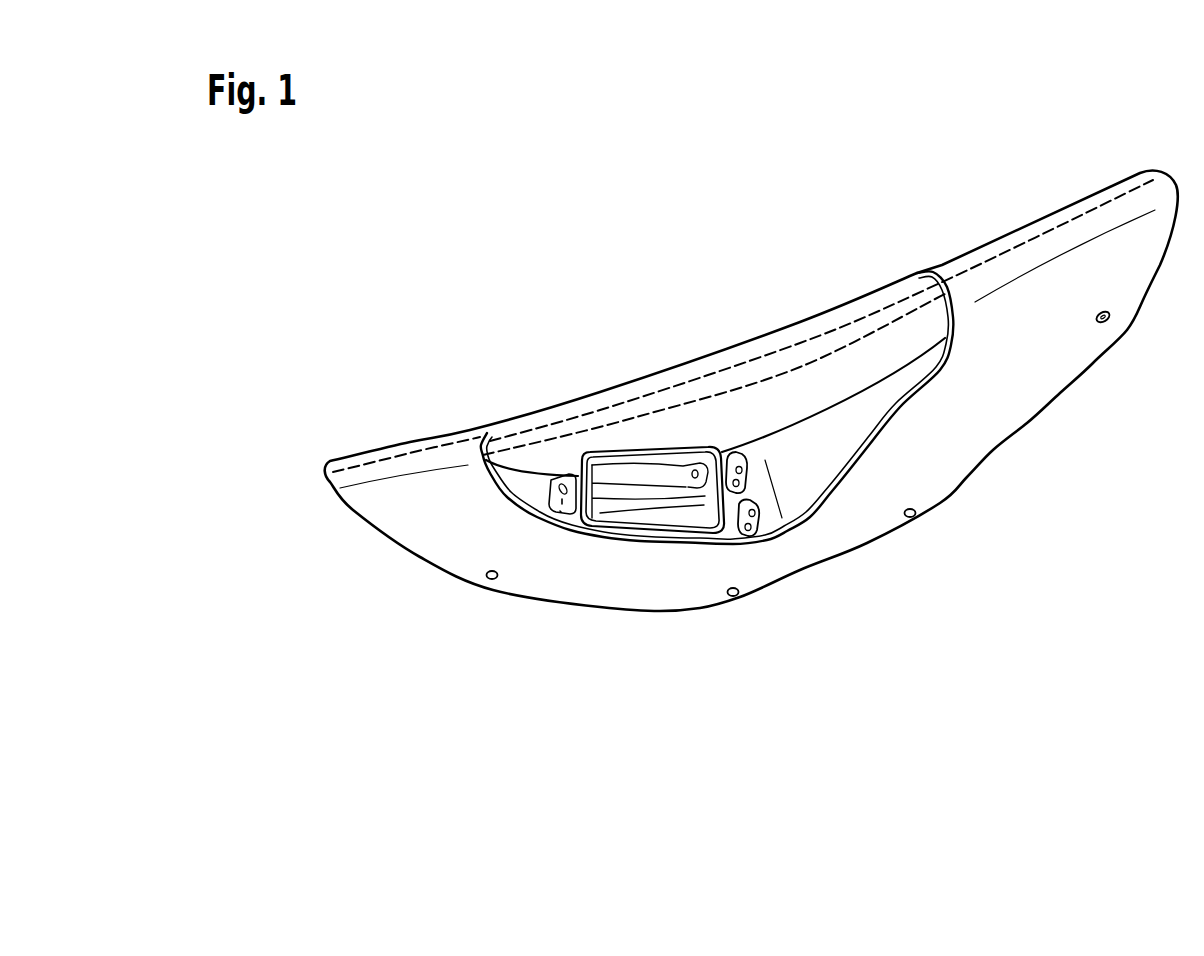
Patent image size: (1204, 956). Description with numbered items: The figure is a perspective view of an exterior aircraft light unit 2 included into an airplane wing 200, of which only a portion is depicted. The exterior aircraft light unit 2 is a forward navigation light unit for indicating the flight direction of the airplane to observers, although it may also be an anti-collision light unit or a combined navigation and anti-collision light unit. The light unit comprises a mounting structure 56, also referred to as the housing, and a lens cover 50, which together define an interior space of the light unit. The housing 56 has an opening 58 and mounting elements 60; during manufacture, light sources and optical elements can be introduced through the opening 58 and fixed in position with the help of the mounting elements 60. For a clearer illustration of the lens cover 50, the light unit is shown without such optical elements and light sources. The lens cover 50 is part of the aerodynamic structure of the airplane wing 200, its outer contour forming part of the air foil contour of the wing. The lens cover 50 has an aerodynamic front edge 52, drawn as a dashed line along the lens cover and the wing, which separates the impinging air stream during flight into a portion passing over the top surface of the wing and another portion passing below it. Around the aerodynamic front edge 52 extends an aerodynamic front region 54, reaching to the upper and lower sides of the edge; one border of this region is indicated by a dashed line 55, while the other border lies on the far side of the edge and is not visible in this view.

The exterior aircraft light unit 2 is at (604, 351).
The lens cover 50 is at (843, 383).
The aerodynamic front edge 52 is at (703, 378).
The aerodynamic front region 54 is at (650, 405).
The dashed line 55 is at (790, 370).
The mounting structure 56 is at (847, 440).
The opening 58 is at (647, 517).
The mounting elements 60 is at (760, 535).
The airplane wing 200 is at (1053, 363).